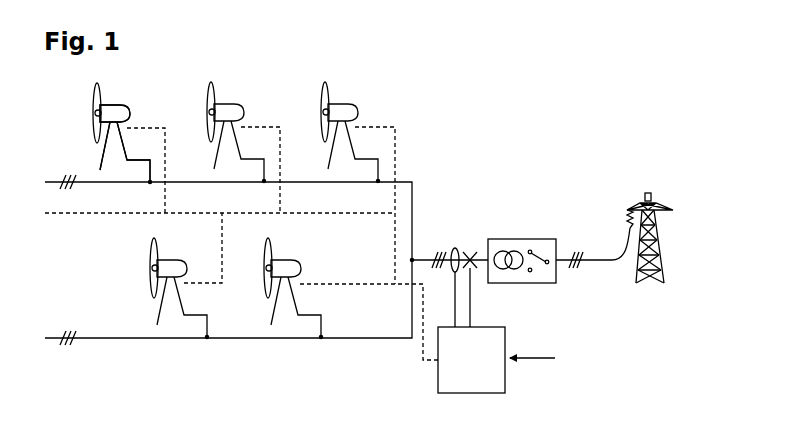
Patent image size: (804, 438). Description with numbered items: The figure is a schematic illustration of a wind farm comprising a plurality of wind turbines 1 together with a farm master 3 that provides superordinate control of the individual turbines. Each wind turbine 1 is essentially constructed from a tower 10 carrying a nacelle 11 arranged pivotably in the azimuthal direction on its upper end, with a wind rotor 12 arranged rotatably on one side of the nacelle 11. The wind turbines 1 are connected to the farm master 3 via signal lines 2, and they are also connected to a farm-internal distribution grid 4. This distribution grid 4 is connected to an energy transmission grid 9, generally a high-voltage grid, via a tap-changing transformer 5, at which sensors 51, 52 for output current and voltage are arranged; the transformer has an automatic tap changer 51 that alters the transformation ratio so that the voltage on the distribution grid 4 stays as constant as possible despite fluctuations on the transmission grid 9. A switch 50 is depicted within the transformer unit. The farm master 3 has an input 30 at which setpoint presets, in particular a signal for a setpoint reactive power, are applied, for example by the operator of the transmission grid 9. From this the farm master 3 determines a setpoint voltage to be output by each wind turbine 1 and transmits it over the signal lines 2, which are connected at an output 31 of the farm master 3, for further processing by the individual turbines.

The wind turbine 1 is at (227, 199).
The signal lines 2 is at (90, 214).
The farm master 3 is at (471, 360).
The farm-internal distribution grid 4 is at (423, 257).
The tap-changing transformer 5 is at (522, 242).
The energy transmission grid 9 is at (645, 196).
The tower 10 is at (101, 158).
The nacelle 11 is at (131, 113).
The wind rotor 12 is at (93, 104).
The input 30 is at (535, 358).
The output 31 is at (436, 362).
The switch 50 is at (545, 250).
The sensor 51 is at (455, 247).
The sensor 52 is at (471, 251).